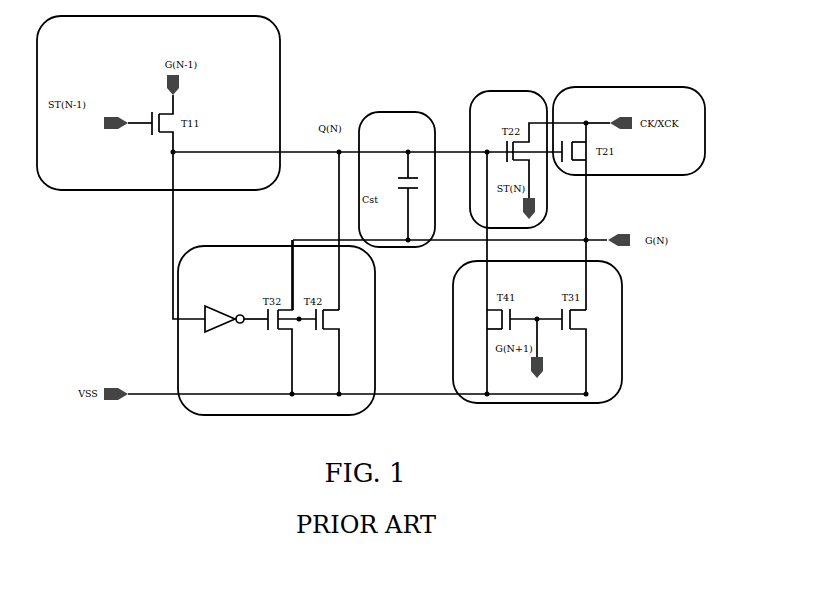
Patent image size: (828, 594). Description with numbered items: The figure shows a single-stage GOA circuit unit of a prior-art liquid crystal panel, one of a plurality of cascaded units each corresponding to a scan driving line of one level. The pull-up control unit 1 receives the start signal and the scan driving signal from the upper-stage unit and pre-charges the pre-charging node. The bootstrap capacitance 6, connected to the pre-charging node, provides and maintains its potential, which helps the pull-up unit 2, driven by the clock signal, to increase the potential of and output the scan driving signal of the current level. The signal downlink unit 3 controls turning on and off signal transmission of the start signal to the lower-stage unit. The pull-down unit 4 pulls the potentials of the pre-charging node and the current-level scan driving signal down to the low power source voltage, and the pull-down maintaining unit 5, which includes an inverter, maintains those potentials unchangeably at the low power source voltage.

The pull-up control unit 1 is at (158, 103).
The pull-up unit 2 is at (629, 131).
The signal downlink unit 3 is at (528, 159).
The pull-down unit 4 is at (537, 332).
The pull-down maintaining unit 5 is at (276, 327).
The bootstrap capacitance 6 is at (397, 179).